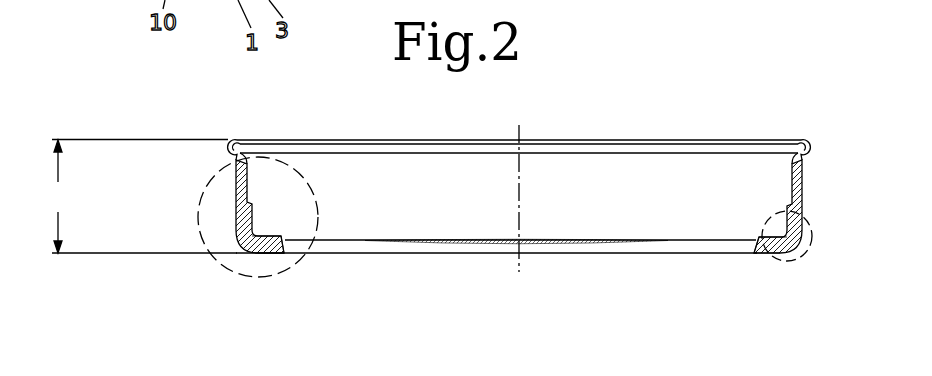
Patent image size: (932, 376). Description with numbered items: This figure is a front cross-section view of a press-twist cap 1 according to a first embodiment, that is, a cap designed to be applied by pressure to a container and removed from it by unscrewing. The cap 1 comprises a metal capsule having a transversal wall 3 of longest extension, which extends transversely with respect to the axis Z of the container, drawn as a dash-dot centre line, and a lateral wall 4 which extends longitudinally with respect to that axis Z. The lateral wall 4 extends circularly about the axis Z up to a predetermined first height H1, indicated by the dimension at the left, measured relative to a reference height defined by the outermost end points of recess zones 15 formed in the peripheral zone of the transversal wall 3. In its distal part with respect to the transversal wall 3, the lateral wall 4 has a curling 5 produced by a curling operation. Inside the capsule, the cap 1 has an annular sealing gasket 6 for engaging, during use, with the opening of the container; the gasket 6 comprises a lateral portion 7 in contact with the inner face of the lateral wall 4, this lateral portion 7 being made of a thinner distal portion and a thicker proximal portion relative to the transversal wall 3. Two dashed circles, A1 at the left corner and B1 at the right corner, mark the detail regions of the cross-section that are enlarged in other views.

The cap 1 is at (666, 115).
The transversal wall 3 is at (586, 256).
The lateral wall 4 is at (808, 183).
The curling 5 is at (823, 135).
The sealing gasket 6 is at (790, 257).
The lateral portion 7 is at (258, 201).
The recess zones 15 is at (283, 251).
The detail region A1 is at (233, 272).
The detail region B1 is at (810, 253).
The axis Z is at (521, 130).
The first height H1 is at (140, 197).